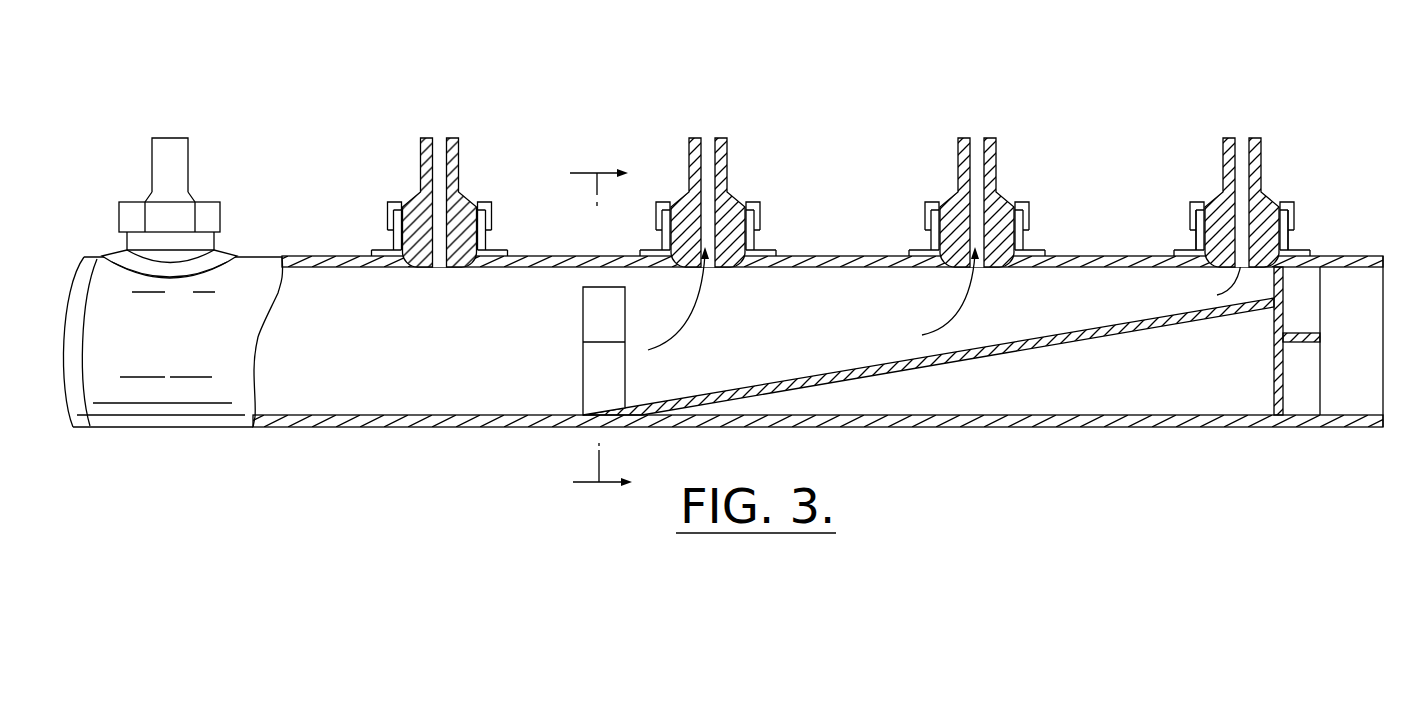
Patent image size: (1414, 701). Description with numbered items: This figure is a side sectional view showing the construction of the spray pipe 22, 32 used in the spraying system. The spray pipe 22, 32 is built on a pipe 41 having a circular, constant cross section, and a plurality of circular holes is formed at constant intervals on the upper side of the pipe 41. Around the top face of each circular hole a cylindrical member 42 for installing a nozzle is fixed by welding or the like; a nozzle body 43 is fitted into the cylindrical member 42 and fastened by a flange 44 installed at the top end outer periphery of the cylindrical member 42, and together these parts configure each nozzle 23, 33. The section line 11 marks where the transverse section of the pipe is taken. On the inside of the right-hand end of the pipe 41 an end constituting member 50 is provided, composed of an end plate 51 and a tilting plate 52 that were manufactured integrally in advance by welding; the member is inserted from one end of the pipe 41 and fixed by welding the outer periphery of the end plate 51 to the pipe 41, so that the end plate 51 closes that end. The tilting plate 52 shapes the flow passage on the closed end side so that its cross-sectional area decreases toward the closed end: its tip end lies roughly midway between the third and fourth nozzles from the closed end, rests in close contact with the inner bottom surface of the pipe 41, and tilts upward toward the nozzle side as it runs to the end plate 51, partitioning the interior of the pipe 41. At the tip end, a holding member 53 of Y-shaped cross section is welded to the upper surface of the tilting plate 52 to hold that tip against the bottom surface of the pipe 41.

The section line 11- 11 is at (601, 330).
The spray pipe 22 is at (723, 323).
The spray pipe 32 is at (723, 323).
The nozzle 23 is at (1220, 152).
The nozzle 33 is at (1220, 152).
The pipe 41 is at (873, 427).
The cylindrical member 42 is at (1197, 238).
The nozzle body 43 is at (1260, 160).
The flange 44 is at (1200, 197).
The end constituting member 50 is at (1325, 378).
The end plate 51 is at (1282, 362).
The tilting plate 52 is at (1147, 327).
The holding member 53 is at (583, 370).